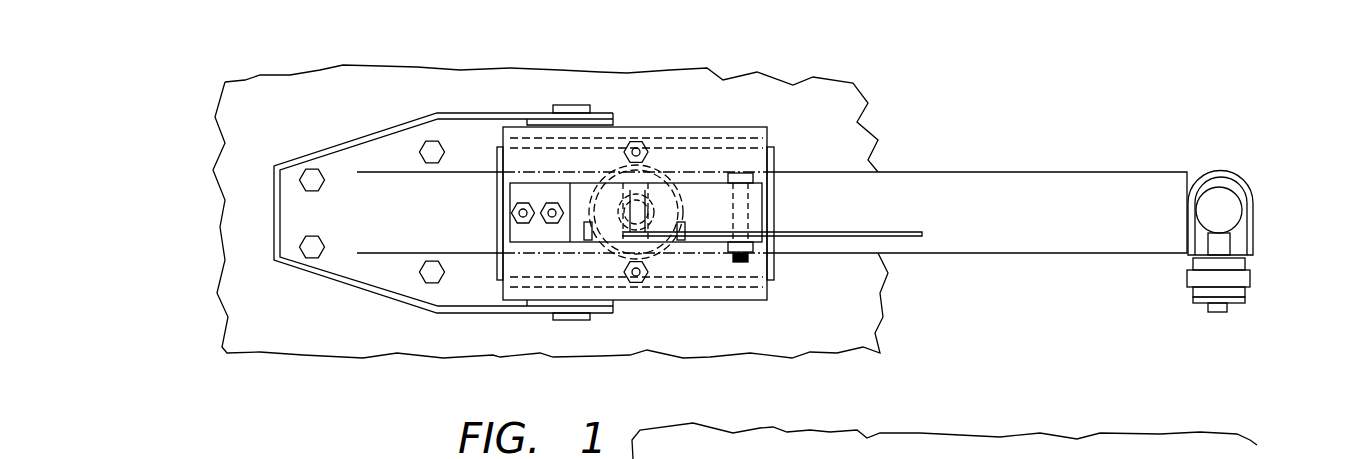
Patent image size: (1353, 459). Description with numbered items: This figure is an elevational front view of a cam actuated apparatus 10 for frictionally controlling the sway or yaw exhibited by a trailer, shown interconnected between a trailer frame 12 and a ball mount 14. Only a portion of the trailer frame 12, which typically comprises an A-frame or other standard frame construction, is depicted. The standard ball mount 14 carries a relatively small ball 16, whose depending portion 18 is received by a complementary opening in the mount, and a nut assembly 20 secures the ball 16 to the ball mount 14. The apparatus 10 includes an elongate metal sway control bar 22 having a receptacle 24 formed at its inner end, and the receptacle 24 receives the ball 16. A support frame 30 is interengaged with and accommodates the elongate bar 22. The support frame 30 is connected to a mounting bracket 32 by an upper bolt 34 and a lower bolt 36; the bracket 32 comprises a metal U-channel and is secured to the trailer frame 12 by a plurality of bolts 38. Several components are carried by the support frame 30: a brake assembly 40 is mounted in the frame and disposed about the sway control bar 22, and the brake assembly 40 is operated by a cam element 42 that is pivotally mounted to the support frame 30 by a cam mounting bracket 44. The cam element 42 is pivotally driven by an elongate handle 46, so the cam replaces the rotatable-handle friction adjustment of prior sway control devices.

The cam actuated apparatus 10 is at (797, 142).
The trailer frame 12 is at (582, 70).
The ball mount 14 is at (1253, 278).
The ball 16 is at (1222, 207).
The depending portion 18 is at (1230, 255).
The nut assembly 20 is at (1247, 297).
The sway control bar 22 is at (978, 172).
The receptacle 24 is at (1222, 171).
The support frame 30 is at (705, 127).
The mounting bracket 32 is at (420, 113).
The upper bolt 34 is at (562, 105).
The lower bolt 36 is at (575, 320).
The bolts 38 is at (423, 148).
The brake assembly 40 is at (773, 147).
The cam element 42 is at (650, 193).
The cam mounting bracket 44 is at (717, 242).
The handle 46 is at (905, 240).